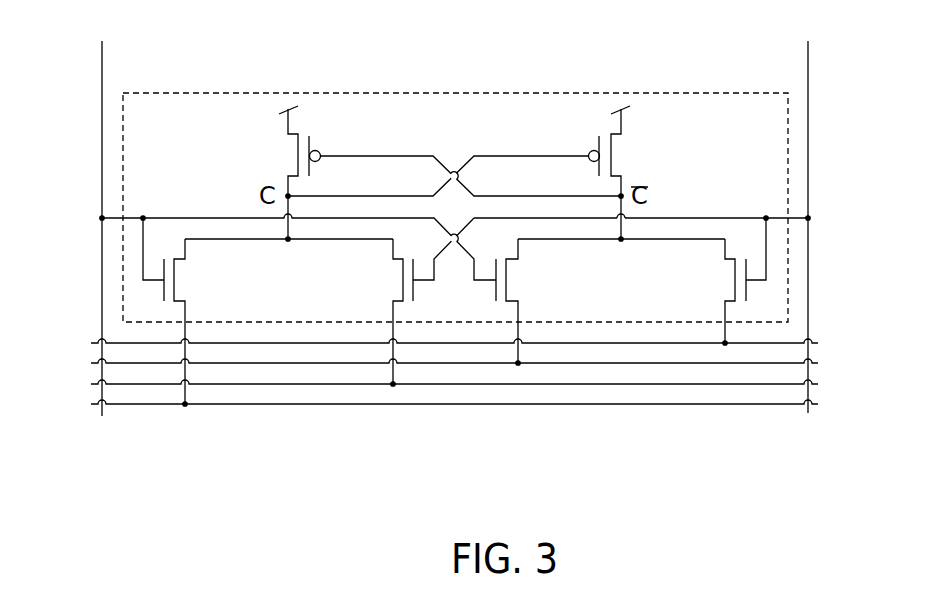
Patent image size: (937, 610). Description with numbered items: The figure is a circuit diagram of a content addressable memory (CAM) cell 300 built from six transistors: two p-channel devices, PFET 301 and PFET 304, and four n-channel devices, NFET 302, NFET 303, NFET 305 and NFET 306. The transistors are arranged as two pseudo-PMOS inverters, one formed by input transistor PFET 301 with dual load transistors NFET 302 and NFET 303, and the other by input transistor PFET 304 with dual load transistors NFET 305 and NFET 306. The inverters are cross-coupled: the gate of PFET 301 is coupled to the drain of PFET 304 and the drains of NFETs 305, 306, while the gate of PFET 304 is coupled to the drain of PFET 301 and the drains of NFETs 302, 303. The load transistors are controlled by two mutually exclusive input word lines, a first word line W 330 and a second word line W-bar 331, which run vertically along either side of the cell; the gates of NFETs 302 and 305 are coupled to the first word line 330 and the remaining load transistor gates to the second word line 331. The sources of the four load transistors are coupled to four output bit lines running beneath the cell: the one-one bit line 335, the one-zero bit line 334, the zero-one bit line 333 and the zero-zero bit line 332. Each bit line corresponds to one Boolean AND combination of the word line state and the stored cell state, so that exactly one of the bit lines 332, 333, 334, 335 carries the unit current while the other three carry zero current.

The content addressable memory (CAM) cell 300 is at (453, 88).
The PFET 301 is at (279, 155).
The NFET 302 is at (193, 279).
The NFET 303 is at (382, 279).
The PFET 304 is at (628, 155).
The NFET 305 is at (525, 279).
The NFET 306 is at (715, 279).
The first word line W 330 is at (114, 62).
The second word line W-bar 331 is at (794, 62).
The output bit line B00 332 is at (741, 358).
The output bit line B01 333 is at (533, 378).
The output bit line B10 334 is at (408, 398).
The output bit line B11 335 is at (200, 420).